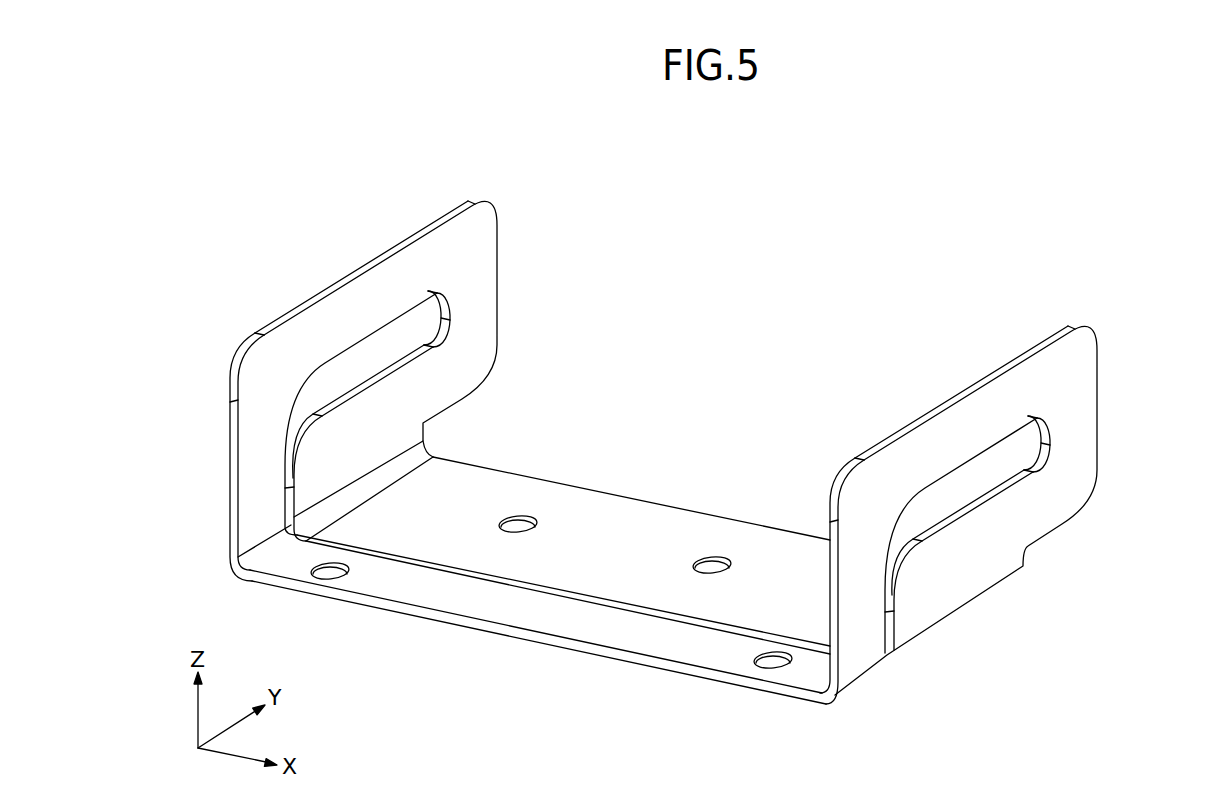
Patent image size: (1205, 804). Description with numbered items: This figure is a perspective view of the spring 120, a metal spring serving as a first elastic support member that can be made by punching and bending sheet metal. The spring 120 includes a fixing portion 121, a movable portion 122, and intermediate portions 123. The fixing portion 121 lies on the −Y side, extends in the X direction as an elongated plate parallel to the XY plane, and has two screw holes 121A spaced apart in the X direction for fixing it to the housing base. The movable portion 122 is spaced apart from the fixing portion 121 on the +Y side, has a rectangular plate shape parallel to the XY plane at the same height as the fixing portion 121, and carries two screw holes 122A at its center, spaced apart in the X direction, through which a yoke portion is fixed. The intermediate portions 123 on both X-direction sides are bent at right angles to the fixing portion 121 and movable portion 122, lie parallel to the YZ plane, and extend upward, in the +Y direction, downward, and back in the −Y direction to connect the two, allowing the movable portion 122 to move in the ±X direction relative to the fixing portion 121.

The spring 120 is at (950, 191).
The fixing portion 121 is at (553, 620).
The screw holes 121A is at (772, 662).
The movable portion 122 is at (673, 532).
The screw holes 122A is at (517, 523).
The intermediate portions 123 is at (1077, 398).